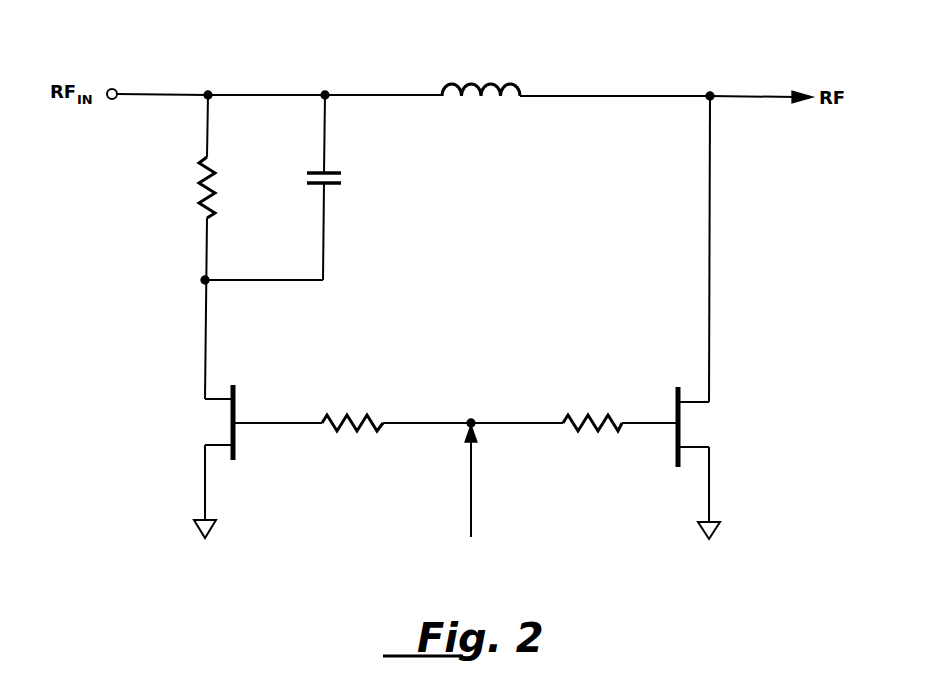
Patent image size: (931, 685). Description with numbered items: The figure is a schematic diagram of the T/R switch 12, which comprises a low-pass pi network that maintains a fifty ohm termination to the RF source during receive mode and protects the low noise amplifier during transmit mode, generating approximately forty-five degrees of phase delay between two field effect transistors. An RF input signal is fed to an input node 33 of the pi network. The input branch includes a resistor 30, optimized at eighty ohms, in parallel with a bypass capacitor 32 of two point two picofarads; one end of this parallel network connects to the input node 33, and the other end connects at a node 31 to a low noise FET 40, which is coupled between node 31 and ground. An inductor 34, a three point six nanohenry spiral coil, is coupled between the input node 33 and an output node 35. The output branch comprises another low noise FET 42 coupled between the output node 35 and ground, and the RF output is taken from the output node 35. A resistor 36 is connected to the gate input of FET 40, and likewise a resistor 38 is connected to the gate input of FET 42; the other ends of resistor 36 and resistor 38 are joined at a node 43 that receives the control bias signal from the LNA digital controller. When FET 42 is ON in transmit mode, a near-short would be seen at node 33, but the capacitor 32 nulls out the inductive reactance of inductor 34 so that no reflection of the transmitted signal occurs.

The T/R switch 12 is at (460, 207).
The resistor 30 is at (217, 170).
The node 31 is at (204, 279).
The bypass capacitor 32 is at (341, 184).
The input node 33 is at (208, 93).
The inductor 34 is at (449, 85).
The output node 35 is at (710, 95).
The resistor 36 is at (328, 418).
The resistor 38 is at (569, 418).
The low noise FET 40 is at (244, 435).
The low noise FET 42 is at (666, 440).
The node 43 is at (475, 418).